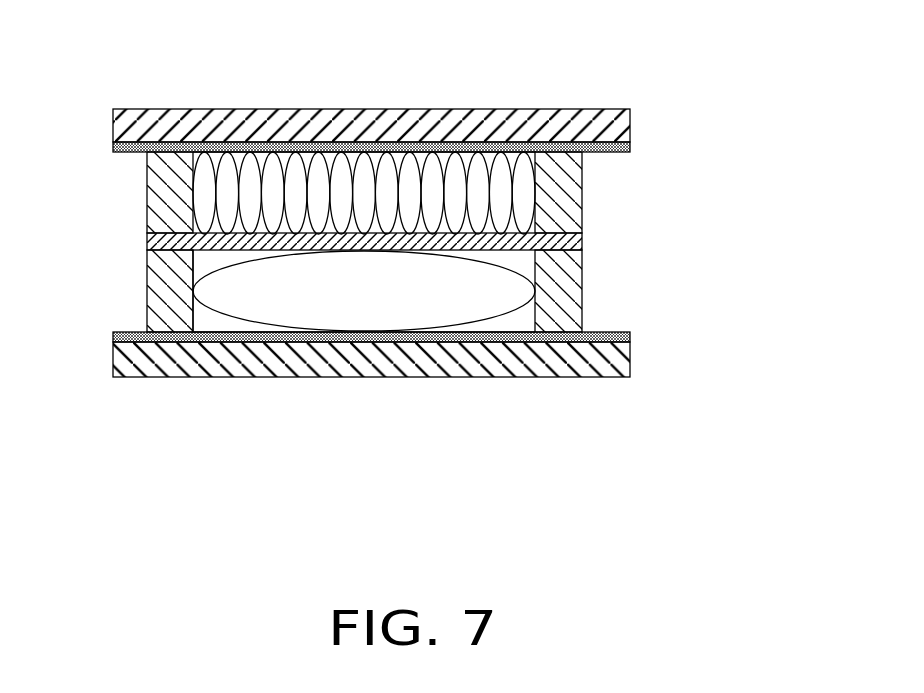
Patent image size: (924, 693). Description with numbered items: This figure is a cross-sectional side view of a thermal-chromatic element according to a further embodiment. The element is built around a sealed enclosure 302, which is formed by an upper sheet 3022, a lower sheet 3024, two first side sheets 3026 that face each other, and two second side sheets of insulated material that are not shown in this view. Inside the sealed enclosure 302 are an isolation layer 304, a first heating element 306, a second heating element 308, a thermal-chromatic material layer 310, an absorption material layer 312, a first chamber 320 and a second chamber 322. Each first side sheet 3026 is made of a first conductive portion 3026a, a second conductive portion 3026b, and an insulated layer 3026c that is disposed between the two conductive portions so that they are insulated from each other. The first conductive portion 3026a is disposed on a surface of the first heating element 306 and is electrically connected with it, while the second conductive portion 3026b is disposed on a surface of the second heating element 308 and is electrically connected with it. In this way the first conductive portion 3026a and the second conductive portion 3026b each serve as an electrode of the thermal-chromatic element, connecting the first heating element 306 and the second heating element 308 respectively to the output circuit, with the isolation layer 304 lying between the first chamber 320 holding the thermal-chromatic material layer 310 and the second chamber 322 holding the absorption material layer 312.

The sealed enclosure 302 is at (457, 241).
The upper sheet 3022 is at (631, 121).
The lower sheet 3024 is at (452, 359).
The first side sheet 3026 is at (478, 242).
The first conductive portion 3026a is at (555, 197).
The second conductive portion 3026b is at (563, 297).
The insulated layer 3026c is at (583, 240).
The isolation layer 304 is at (193, 279).
The first heating element 306 is at (113, 146).
The second heating element 308 is at (113, 336).
The thermal-chromatic material layer 310 is at (270, 165).
The absorption material layer 312 is at (430, 315).
The first chamber 320 is at (215, 155).
The second chamber 322 is at (217, 323).